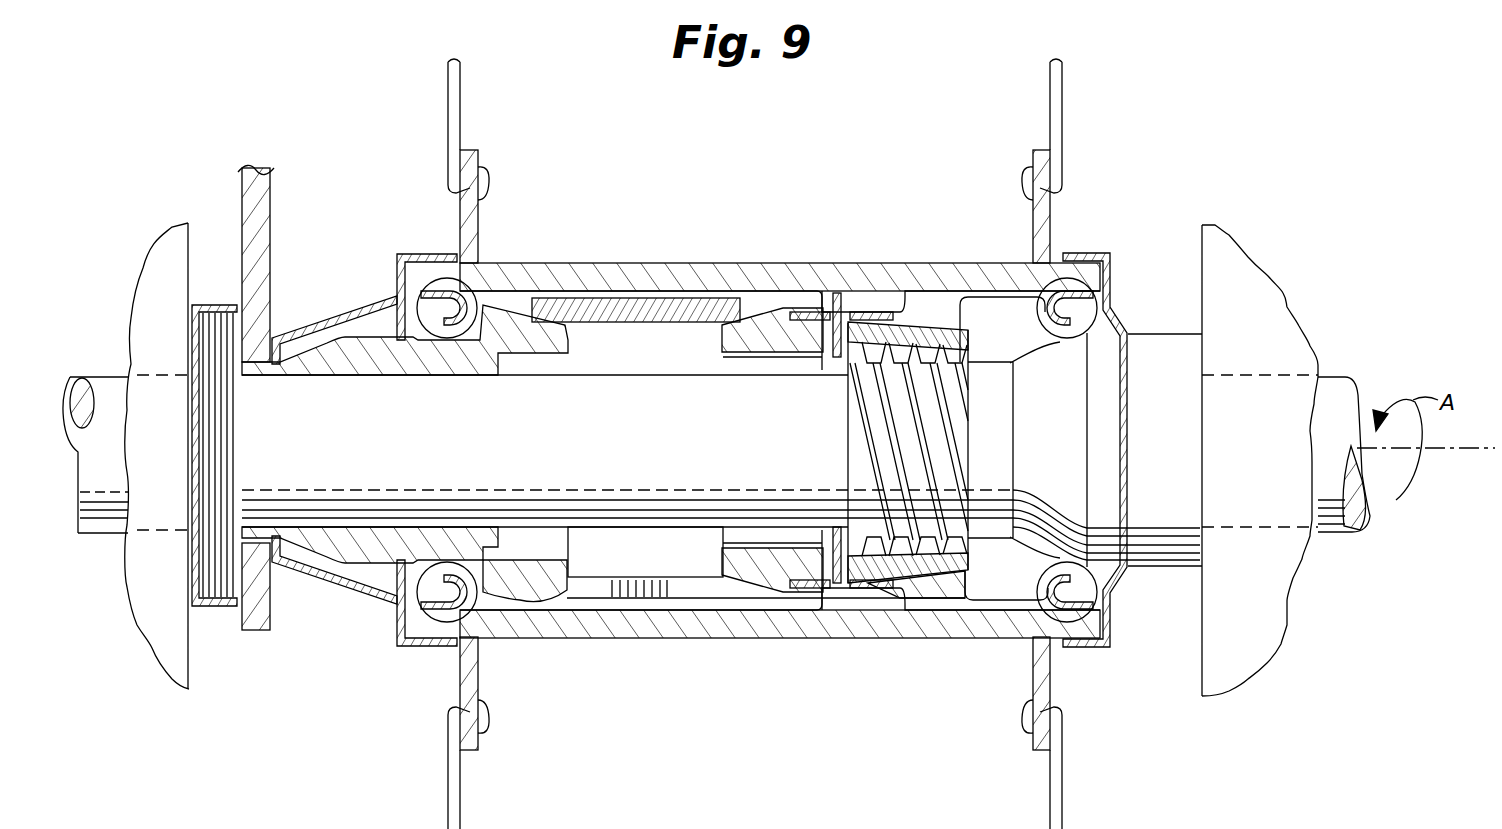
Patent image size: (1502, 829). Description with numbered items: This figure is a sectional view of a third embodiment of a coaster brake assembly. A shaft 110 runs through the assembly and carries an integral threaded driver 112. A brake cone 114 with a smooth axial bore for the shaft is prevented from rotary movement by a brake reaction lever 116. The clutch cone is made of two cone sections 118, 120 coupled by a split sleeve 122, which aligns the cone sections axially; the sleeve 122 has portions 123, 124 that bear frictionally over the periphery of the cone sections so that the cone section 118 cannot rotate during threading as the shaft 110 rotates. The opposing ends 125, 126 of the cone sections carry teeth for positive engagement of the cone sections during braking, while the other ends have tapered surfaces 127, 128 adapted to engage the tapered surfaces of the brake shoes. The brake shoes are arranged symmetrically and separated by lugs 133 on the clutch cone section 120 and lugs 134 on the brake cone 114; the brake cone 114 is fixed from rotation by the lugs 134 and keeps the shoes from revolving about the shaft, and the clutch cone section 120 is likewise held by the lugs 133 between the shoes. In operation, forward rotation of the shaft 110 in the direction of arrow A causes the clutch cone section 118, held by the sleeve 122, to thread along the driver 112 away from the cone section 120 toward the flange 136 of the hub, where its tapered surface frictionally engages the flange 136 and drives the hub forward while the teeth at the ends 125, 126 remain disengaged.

The shaft 110 is at (1330, 385).
The threaded driver 112 is at (930, 450).
The brake cone 114 is at (372, 338).
The brake reaction lever 116 is at (262, 206).
The clutch cone section 118 is at (917, 327).
The clutch cone section 120 is at (748, 333).
The split sleeve 122 is at (865, 590).
The sleeve portion 123 is at (808, 590).
The sleeve portion 124 is at (888, 590).
The toothed end of cone section 125 is at (867, 327).
The toothed end of cone section 126 is at (823, 327).
The tapered surface 127 is at (970, 266).
The tapered surface 128 is at (767, 322).
The clutch cone lugs 133 is at (717, 600).
The brake cone lugs 134 is at (573, 597).
The flange of the hub 136 is at (953, 318).